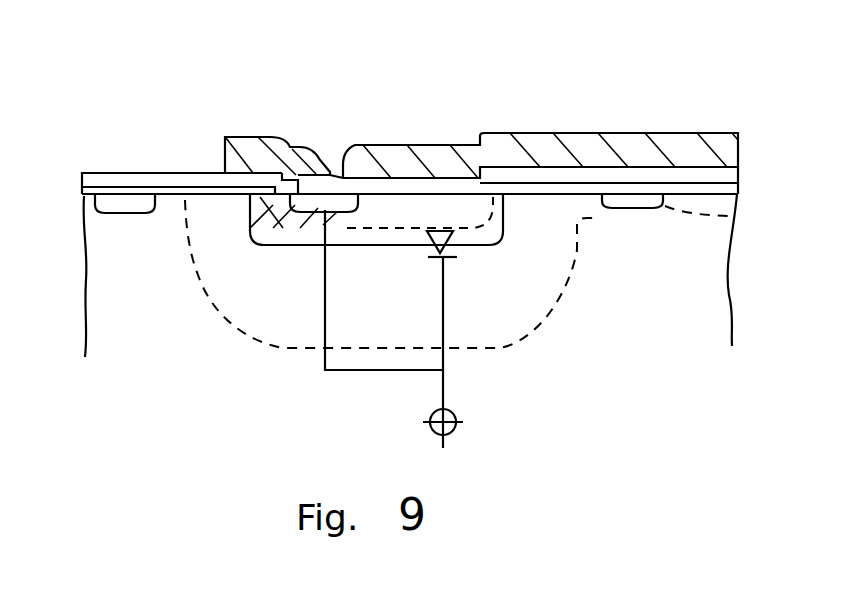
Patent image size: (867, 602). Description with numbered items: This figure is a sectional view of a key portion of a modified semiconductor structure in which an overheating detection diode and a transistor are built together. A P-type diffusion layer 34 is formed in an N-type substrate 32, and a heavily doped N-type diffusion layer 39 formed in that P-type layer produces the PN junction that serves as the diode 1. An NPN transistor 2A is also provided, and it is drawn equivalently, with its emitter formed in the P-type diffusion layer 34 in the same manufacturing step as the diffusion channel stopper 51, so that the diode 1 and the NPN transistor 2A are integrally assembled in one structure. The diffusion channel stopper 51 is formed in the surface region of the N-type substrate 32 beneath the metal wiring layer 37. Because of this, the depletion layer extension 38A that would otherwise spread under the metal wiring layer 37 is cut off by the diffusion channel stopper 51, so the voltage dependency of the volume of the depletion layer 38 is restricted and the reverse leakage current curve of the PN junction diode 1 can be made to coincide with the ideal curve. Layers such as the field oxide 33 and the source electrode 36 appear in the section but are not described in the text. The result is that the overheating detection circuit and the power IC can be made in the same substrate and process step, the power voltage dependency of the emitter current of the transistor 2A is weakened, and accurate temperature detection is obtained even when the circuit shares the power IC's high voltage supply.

The PN junction diode 1 is at (458, 253).
The NPN transistor 2A is at (331, 221).
The N-type substrate 32 is at (103, 264).
The field oxide layer 33 is at (217, 190).
The P-type diffusion layer 34 is at (420, 208).
The source electrode 36 is at (103, 182).
The metal wiring layer 37 is at (493, 133).
The depletion layer 38 is at (550, 215).
The depletion layer extension 38A is at (703, 205).
The n+ diffusion layer 39 is at (333, 218).
The n+ diffusion channel stopper 51 is at (152, 203).